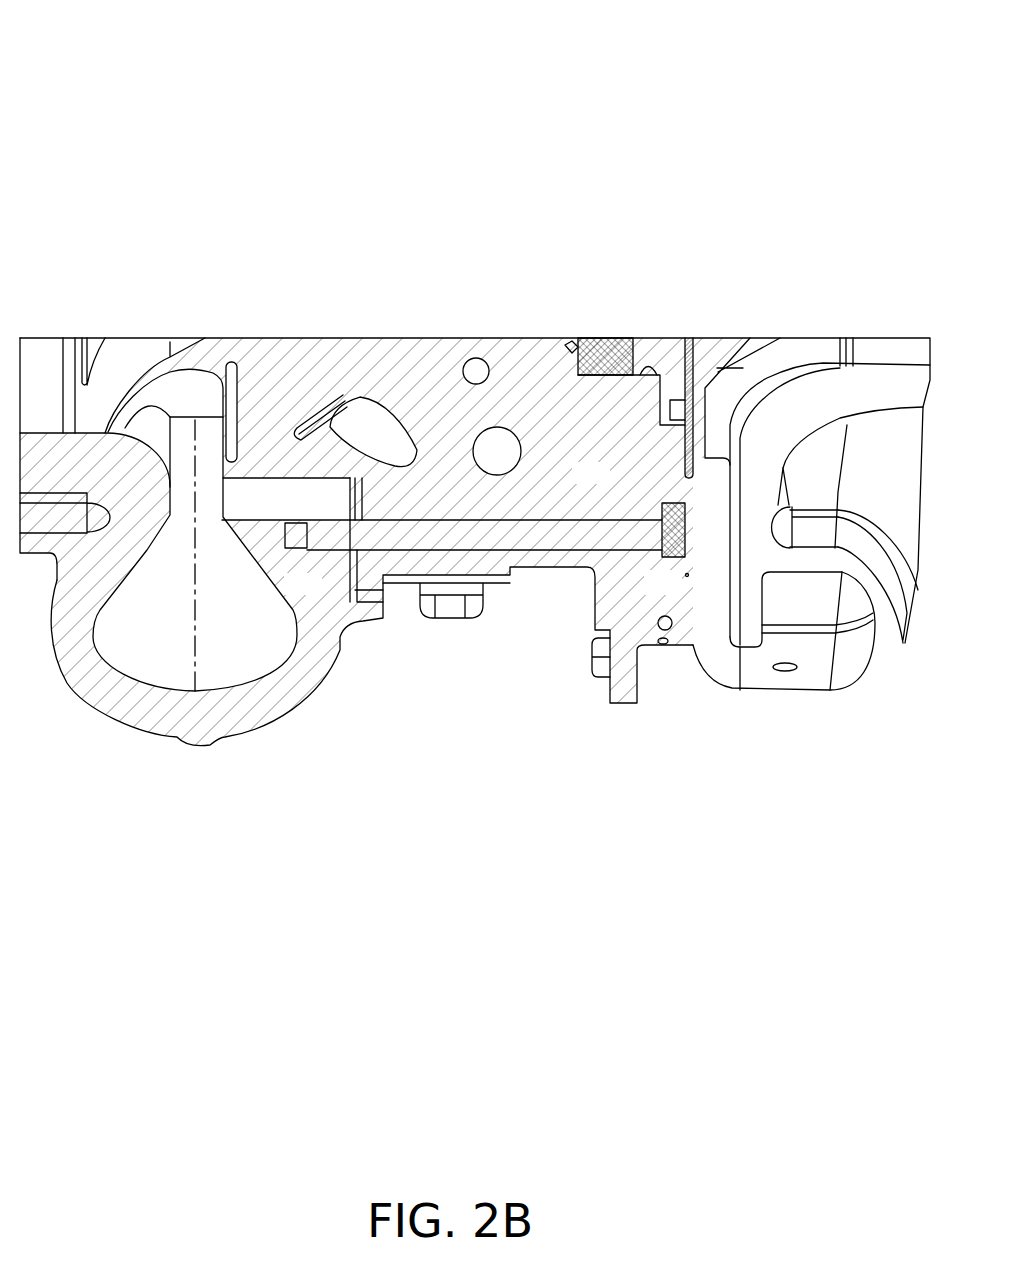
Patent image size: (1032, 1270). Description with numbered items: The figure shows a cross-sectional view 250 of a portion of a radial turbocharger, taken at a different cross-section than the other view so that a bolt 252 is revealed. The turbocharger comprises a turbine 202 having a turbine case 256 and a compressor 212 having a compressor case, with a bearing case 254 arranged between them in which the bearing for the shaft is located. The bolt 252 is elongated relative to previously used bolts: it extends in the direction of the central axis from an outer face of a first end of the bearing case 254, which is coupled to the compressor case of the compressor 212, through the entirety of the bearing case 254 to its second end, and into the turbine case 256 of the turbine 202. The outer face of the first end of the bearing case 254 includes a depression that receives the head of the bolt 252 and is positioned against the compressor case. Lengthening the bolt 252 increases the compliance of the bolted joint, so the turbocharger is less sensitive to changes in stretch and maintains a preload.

The cross-sectional view 250 is at (797, 56).
The turbine 202 is at (100, 717).
The compressor 212 is at (787, 690).
The bolt 252 is at (545, 520).
The bearing case 254 is at (680, 594).
The turbine case 256 is at (320, 594).